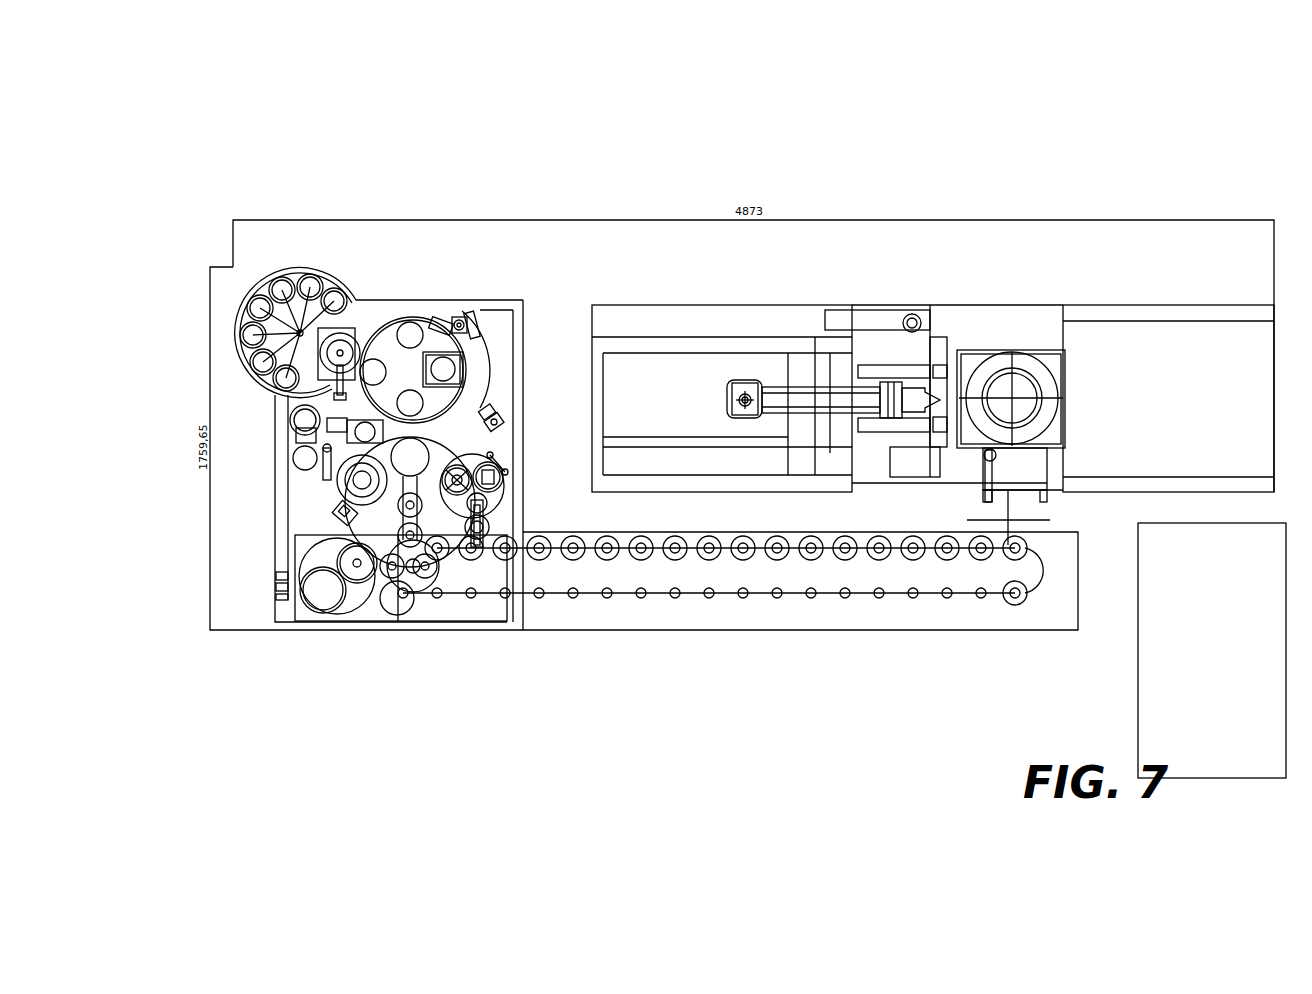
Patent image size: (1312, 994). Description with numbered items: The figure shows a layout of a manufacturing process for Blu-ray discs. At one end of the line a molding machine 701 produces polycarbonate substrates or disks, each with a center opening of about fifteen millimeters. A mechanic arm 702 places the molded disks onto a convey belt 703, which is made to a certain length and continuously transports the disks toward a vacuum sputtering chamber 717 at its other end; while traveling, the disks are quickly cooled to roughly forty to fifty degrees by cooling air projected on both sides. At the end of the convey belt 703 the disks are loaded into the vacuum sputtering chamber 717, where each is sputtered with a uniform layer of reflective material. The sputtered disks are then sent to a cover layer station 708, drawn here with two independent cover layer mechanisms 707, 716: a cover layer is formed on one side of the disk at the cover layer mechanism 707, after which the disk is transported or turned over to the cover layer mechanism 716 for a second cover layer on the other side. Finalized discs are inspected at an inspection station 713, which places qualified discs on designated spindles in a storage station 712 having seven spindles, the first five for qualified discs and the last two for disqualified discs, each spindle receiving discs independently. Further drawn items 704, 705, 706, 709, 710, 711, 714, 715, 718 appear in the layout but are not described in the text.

The molding machine 701 is at (910, 355).
The mechanic arm 702 is at (975, 470).
The convey belt 703 is at (925, 560).
The cylinder 704 is at (483, 520).
The central hub 705 is at (420, 445).
The transfer station 706 is at (500, 505).
The cover layer mechanism 707 is at (497, 463).
The cover layer station 708 is at (483, 405).
The processing station 709 is at (470, 362).
The feed device 710 is at (453, 305).
The rotary turret 711 is at (400, 325).
The storage station 712 is at (272, 282).
The inspection station 713 is at (313, 392).
The drive unit 714 is at (272, 438).
The bracket 715 is at (320, 477).
The cover layer mechanism 716 is at (332, 513).
The vacuum sputtering chamber 717 is at (318, 588).
The gear wheel 718 is at (387, 583).